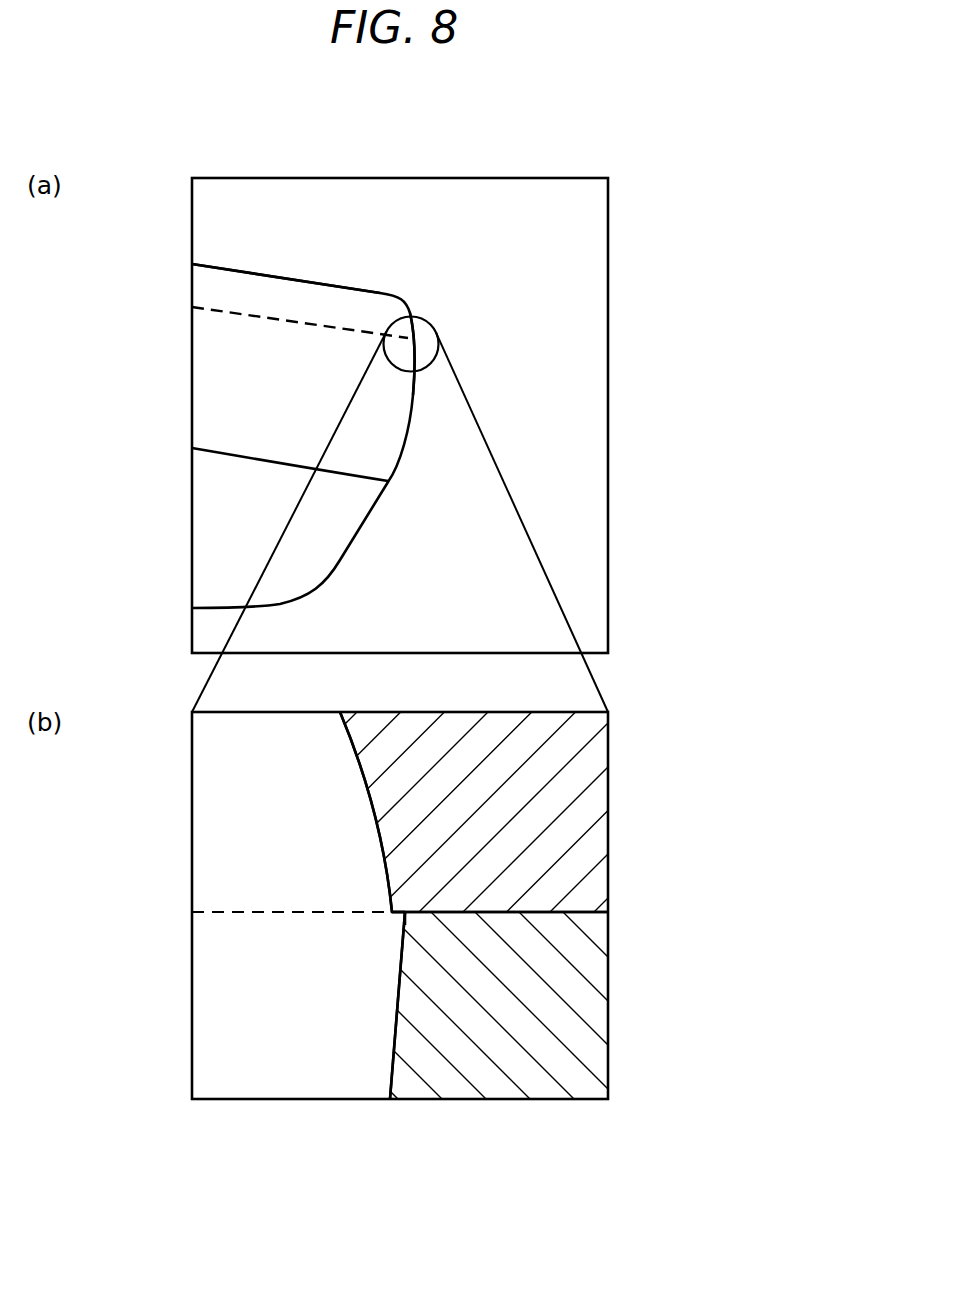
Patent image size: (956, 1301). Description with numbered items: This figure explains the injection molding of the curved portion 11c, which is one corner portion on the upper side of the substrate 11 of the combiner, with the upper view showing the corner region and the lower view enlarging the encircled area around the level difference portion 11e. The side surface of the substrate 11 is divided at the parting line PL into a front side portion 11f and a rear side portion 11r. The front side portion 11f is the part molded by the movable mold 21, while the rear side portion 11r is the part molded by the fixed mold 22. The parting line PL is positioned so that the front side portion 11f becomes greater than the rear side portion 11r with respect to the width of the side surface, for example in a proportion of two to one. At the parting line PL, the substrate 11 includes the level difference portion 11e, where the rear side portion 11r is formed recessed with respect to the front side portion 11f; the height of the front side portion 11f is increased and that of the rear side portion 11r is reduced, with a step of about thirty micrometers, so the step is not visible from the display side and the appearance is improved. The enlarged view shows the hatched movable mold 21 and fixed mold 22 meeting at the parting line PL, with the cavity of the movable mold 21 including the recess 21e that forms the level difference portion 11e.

The substrate 11 is at (192, 903).
The rear side portion 11r is at (222, 284).
The front side portion 11f is at (222, 362).
The curved portion 11c is at (347, 385).
The level difference portion 11e is at (407, 335).
The fixed mold 22 is at (608, 838).
The movable mold 21 is at (608, 1067).
The recess 21e is at (405, 923).
The parting line PL is at (608, 912).